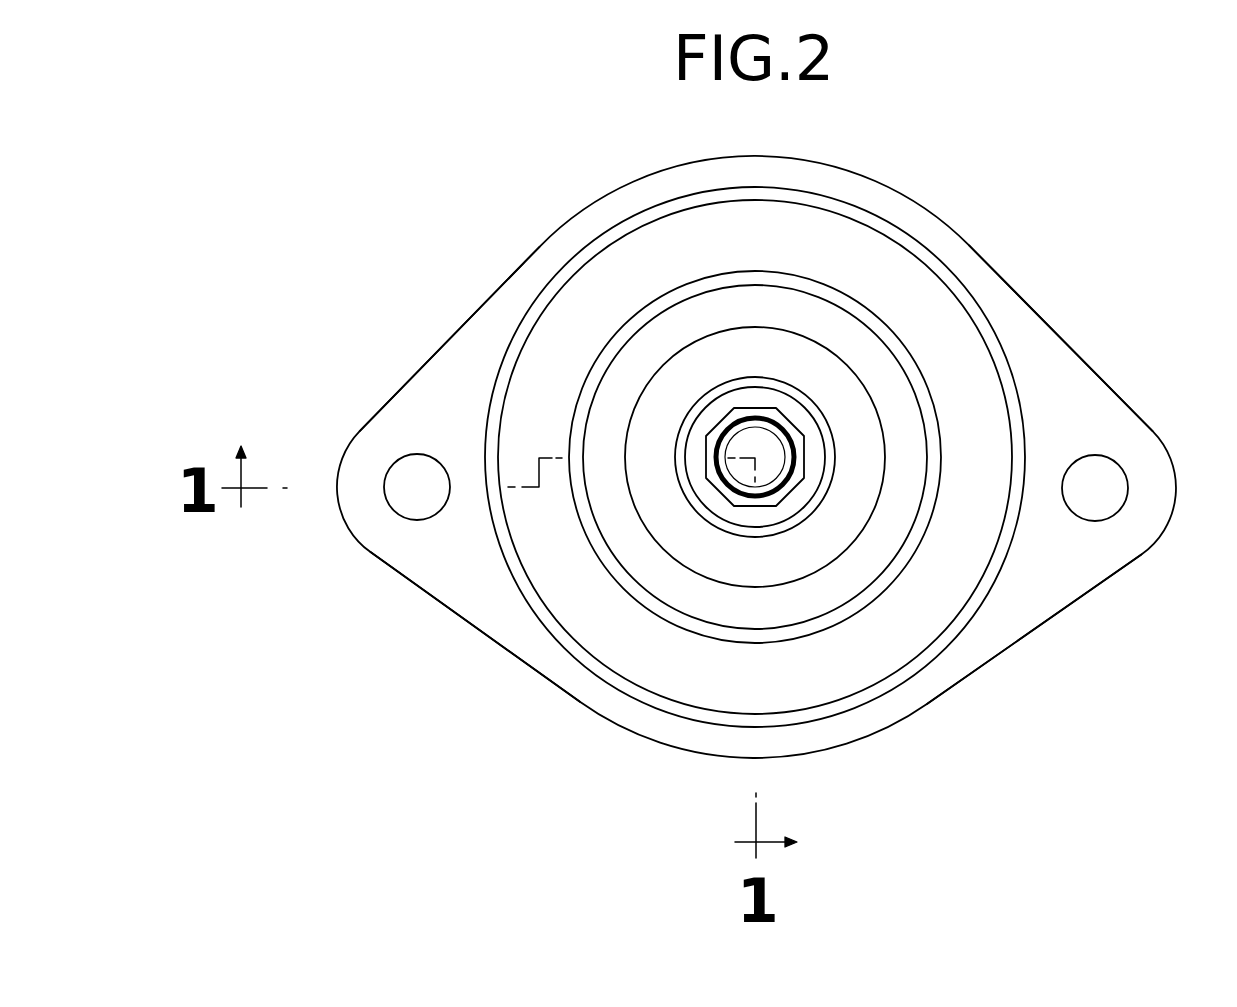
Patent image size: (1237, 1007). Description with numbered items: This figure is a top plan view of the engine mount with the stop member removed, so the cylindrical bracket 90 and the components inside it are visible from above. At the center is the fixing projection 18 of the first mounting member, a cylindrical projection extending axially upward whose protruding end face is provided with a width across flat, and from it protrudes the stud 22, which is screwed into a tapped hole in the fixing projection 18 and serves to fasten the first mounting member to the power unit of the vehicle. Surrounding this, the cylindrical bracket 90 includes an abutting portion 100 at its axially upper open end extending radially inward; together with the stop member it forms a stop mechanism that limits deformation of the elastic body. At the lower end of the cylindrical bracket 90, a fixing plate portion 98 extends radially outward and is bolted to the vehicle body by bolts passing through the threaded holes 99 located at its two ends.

The fixing projection 18 is at (797, 415).
The stud 22 is at (745, 437).
The cylindrical bracket 90 is at (1011, 337).
The fixing plate portion 98 is at (1103, 412).
The threaded holes 99 is at (416, 455).
The abutting portion 100 is at (623, 648).